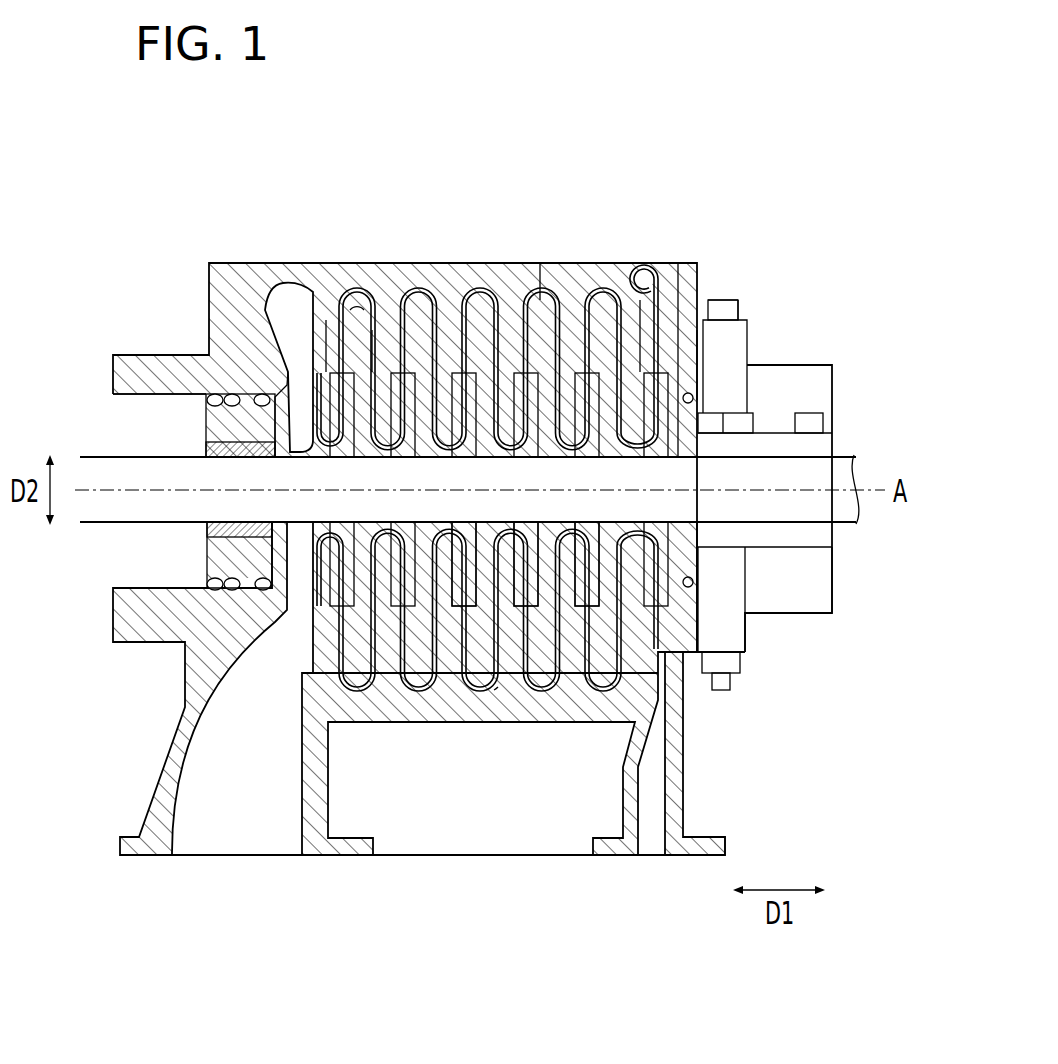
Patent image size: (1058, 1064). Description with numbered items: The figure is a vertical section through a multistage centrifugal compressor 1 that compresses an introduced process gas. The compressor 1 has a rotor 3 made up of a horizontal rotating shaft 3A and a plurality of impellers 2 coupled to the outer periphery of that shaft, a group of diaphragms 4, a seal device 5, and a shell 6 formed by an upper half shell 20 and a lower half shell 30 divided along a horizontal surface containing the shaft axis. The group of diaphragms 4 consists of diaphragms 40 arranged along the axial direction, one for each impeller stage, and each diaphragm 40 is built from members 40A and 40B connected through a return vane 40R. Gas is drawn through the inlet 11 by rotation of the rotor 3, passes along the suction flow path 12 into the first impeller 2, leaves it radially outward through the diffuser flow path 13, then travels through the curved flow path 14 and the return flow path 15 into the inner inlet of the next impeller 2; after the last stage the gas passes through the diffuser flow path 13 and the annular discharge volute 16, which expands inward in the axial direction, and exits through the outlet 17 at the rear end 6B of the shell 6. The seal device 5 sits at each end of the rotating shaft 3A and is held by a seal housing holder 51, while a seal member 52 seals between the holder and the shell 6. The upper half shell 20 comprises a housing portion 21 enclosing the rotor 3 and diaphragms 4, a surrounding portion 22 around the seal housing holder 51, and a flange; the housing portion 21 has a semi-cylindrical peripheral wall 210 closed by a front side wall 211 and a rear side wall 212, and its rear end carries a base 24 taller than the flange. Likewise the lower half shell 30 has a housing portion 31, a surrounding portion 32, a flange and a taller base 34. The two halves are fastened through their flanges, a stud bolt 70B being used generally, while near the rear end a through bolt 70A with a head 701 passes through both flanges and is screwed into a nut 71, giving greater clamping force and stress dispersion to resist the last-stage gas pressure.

The centrifugal compressor 1 is at (806, 192).
The impeller 2 is at (305, 285).
The rotor 3 is at (112, 457).
The rotating shaft 3A is at (172, 457).
The group of diaphragms 4 is at (500, 690).
The seal device 5 is at (207, 530).
The shell 6 is at (674, 300).
The rear end of the shell 6B is at (698, 622).
The inlet 11 is at (182, 840).
The suction flow path 12 is at (275, 298).
The diffuser flow path 13 is at (326, 320).
The curved flow path 14 is at (360, 300).
The return flow path 15 is at (372, 330).
The discharge volute 16 is at (640, 300).
The outlet 17 is at (668, 857).
The upper half shell 20 is at (673, 248).
The housing portion 21 is at (505, 300).
The peripheral wall 210 is at (560, 300).
The front side wall 211 is at (209, 295).
The rear side wall 212 is at (752, 365).
The surrounding portion 22 is at (157, 355).
The base 24 is at (748, 332).
The lower half shell 30 is at (683, 800).
The housing portion 31 is at (405, 723).
The surrounding portion 32 is at (127, 643).
The base 34 is at (745, 640).
The diaphragm 40 is at (637, 937).
The member 40A is at (538, 678).
The member 40B is at (578, 665).
The return vane 40R is at (440, 640).
The seal housing holder 51 is at (207, 558).
The seal member 52 is at (215, 590).
The through bolt 70A is at (748, 305).
The stud bolt 70B is at (745, 418).
The nut 71 is at (742, 668).
The head 701 is at (722, 300).